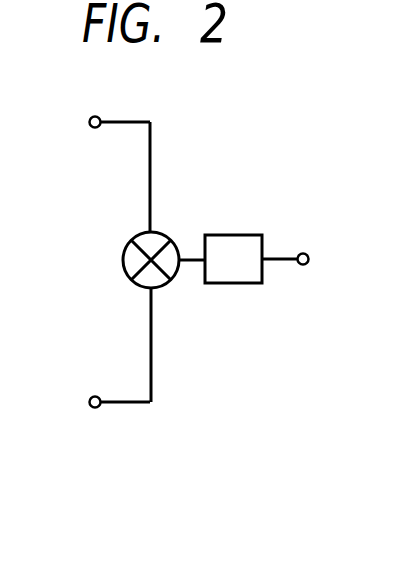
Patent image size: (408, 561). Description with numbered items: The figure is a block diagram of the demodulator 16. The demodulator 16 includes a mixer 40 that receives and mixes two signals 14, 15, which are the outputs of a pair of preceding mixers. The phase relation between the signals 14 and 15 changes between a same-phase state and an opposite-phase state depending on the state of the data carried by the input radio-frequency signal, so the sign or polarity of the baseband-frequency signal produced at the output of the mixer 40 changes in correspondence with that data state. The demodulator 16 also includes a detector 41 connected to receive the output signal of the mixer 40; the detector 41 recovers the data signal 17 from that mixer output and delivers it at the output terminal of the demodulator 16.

The signal 14 is at (126, 400).
The signal 15 is at (101, 125).
The demodulator 16 is at (176, 393).
The data signal 17 is at (277, 257).
The mixer 40 is at (161, 290).
The detector 41 is at (247, 285).